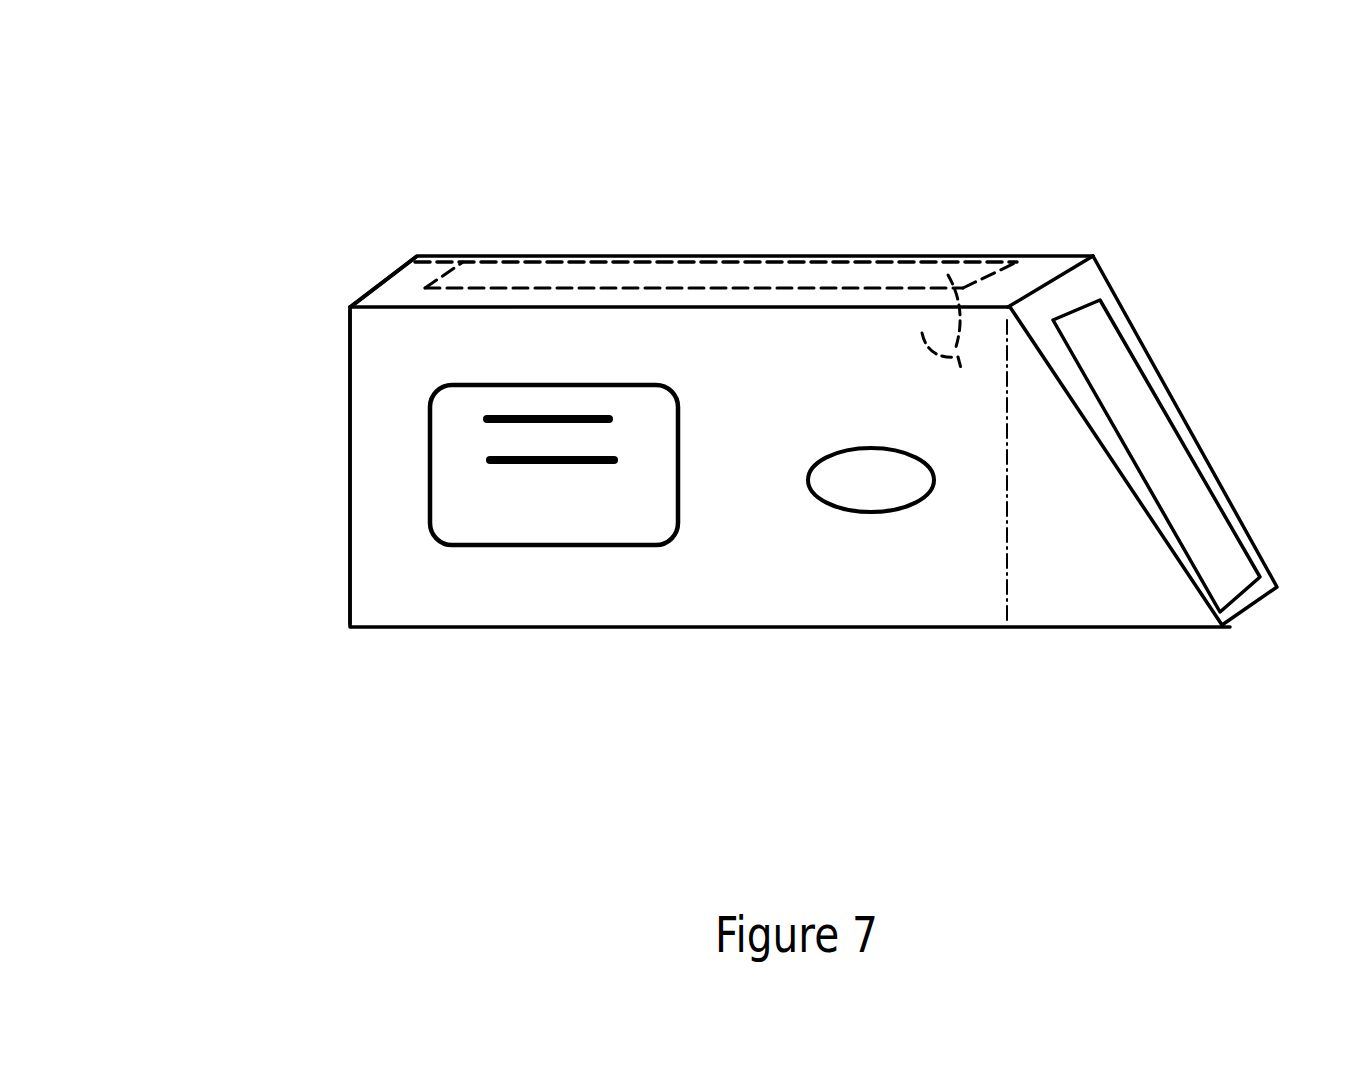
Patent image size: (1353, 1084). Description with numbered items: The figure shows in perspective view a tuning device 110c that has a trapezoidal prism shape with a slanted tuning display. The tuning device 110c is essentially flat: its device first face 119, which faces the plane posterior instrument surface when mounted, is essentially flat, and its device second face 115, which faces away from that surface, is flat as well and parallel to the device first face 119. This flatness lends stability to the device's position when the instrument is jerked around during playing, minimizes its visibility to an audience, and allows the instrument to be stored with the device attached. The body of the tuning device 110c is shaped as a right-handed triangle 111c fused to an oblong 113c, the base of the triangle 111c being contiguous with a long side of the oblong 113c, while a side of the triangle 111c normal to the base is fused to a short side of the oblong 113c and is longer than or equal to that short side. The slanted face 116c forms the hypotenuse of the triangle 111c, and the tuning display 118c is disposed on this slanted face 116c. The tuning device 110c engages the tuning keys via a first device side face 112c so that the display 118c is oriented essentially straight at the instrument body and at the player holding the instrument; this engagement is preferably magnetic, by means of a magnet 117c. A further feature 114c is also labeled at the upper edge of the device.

The tuning device 110c is at (296, 295).
The right-handed triangle 111c is at (1214, 673).
The first device side face 112c is at (350, 477).
The oblong 113c is at (1014, 673).
The top edge 114c is at (413, 277).
The device second face 115 is at (743, 355).
The slanted face 116c is at (1070, 290).
The magnet 117c is at (683, 277).
The tuning display 118c is at (1157, 437).
The device first face 119 is at (948, 273).